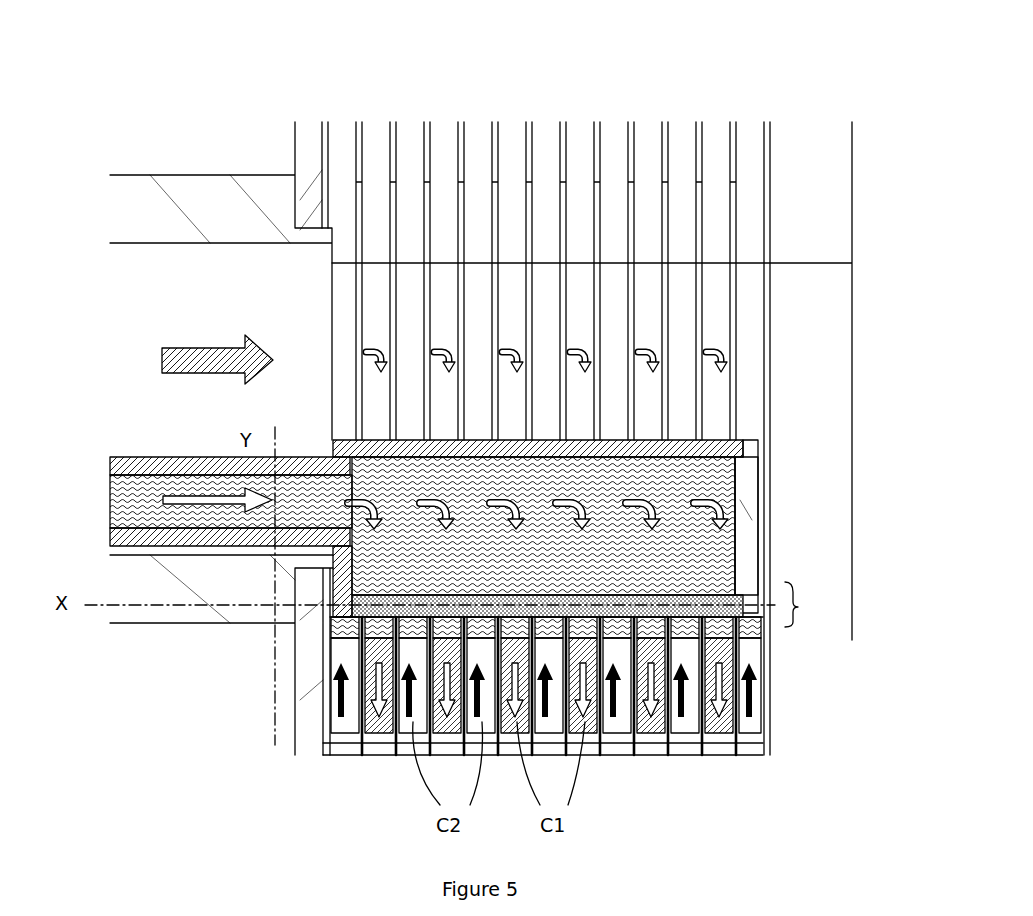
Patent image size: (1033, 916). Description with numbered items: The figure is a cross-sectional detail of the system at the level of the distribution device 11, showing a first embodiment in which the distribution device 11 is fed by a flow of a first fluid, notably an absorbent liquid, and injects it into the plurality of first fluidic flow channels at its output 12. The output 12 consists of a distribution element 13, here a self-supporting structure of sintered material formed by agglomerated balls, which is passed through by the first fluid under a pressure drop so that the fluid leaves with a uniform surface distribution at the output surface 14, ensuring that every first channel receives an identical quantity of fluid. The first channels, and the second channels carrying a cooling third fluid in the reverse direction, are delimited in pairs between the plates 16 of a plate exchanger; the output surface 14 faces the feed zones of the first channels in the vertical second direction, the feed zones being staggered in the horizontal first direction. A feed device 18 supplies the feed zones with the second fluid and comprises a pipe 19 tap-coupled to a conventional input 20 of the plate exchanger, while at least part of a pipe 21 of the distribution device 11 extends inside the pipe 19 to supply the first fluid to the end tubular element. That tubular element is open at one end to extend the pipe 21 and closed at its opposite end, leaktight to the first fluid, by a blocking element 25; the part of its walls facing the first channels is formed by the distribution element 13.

The distribution device 11 is at (745, 488).
The output 12 is at (810, 604).
The distribution element 13 is at (653, 603).
The output surface 14 is at (618, 617).
The plates 16 is at (703, 245).
The feed device 18 is at (168, 275).
The pipe 19 is at (228, 200).
The input 20 is at (315, 205).
The pipe 21 is at (152, 457).
The blocking element 25 is at (745, 540).